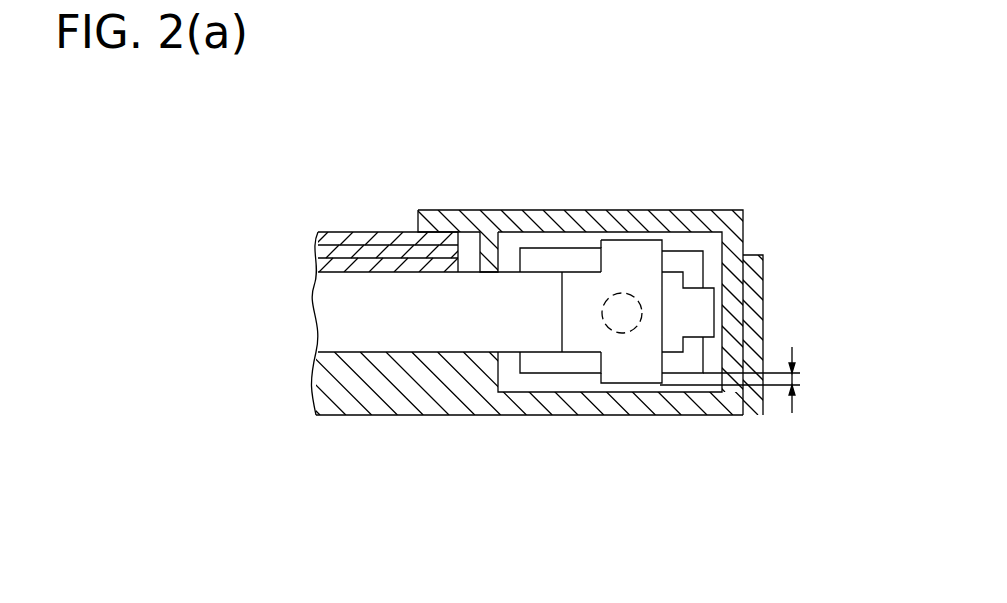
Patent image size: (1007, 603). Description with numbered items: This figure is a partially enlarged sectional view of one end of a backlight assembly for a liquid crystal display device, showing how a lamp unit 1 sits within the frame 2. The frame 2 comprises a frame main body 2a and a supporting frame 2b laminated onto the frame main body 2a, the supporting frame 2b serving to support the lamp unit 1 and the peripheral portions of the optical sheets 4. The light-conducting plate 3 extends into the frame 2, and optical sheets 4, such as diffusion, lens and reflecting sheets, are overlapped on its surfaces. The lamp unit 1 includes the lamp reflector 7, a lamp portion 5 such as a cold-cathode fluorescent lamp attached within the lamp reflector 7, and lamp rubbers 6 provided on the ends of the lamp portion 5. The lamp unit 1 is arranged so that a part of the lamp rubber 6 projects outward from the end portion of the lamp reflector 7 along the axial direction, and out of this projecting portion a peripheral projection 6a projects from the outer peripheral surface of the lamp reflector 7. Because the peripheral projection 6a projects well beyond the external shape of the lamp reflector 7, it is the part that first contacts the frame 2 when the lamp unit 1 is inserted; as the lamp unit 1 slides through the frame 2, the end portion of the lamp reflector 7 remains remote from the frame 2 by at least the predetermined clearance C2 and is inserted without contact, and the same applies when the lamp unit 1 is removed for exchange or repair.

The lamp unit 1 is at (569, 289).
The frame 2 is at (583, 239).
The frame main body 2a is at (758, 288).
The supporting frame 2b is at (700, 220).
The light-conducting plate 3 is at (353, 320).
The optical sheets 4 is at (358, 252).
The lamp portion 5 is at (614, 312).
The lamp rubber 6 is at (665, 335).
The peripheral projection 6a is at (636, 255).
The lamp reflector 7 is at (548, 262).
The predetermined clearance C2 is at (793, 382).